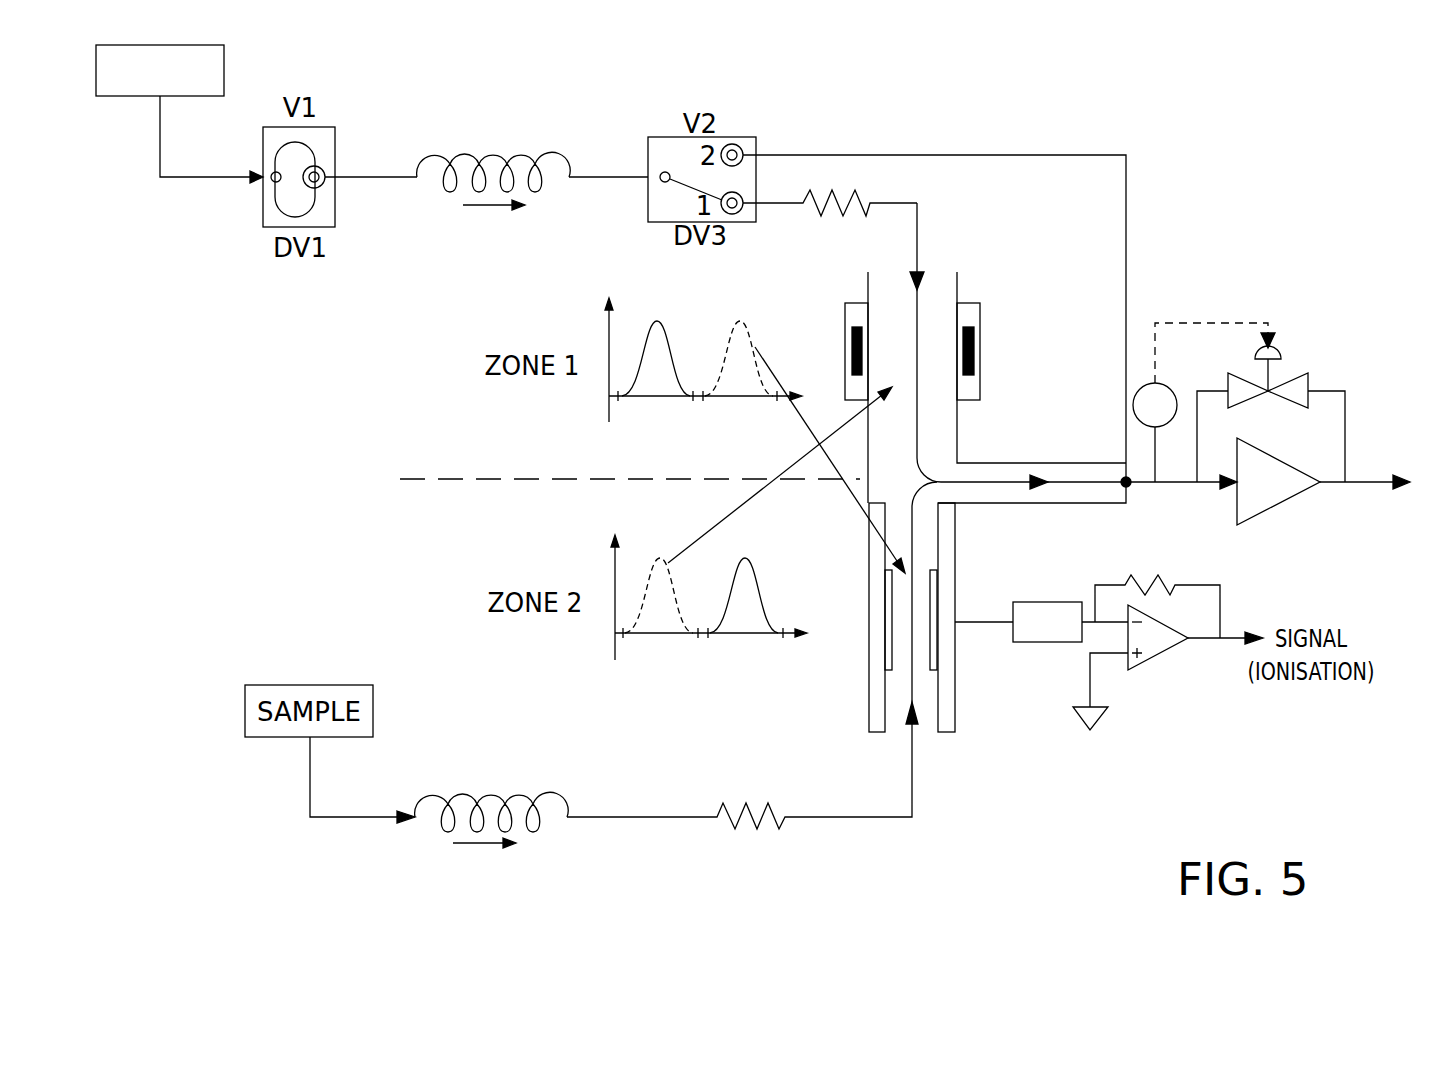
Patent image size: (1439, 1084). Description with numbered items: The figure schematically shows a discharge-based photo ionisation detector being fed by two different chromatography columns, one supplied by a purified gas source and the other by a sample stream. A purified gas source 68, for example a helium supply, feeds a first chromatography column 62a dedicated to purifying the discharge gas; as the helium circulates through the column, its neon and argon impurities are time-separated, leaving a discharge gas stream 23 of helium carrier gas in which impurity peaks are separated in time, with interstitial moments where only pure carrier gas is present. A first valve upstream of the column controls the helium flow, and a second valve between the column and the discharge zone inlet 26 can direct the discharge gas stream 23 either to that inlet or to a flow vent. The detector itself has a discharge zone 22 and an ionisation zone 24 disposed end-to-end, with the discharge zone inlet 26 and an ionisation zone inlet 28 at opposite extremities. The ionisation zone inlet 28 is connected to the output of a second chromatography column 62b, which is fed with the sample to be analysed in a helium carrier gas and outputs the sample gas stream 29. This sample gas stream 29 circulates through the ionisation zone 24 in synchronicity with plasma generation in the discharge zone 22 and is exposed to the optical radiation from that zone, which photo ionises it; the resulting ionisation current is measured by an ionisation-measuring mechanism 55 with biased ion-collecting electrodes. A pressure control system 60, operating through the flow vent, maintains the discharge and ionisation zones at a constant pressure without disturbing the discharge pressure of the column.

The purified gas source 68 is at (194, 44).
The first chromatography column 62a is at (500, 152).
The discharge gas stream 23 is at (604, 178).
The discharge zone inlet 26 is at (931, 253).
The discharge zone 22 is at (1000, 343).
The ionisation zone 24 is at (992, 572).
The ionisation zone inlet 28 is at (900, 730).
The ionisation-measuring mechanism 55 is at (1075, 754).
The pressure control system 60 is at (1368, 366).
The second chromatography column 62b is at (492, 792).
The sample gas stream 29 is at (643, 818).